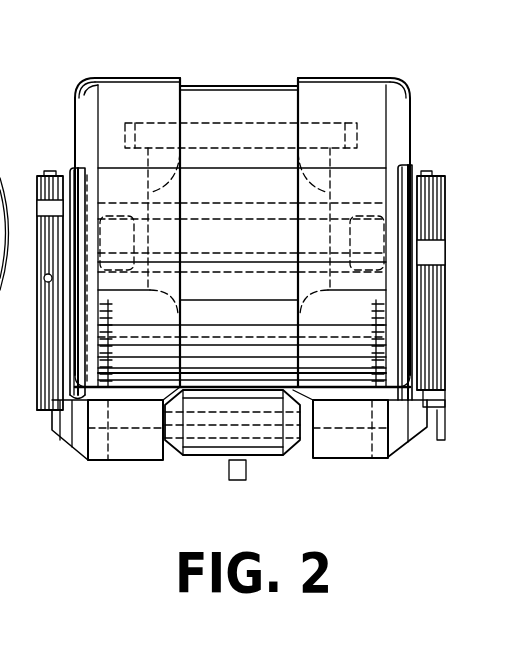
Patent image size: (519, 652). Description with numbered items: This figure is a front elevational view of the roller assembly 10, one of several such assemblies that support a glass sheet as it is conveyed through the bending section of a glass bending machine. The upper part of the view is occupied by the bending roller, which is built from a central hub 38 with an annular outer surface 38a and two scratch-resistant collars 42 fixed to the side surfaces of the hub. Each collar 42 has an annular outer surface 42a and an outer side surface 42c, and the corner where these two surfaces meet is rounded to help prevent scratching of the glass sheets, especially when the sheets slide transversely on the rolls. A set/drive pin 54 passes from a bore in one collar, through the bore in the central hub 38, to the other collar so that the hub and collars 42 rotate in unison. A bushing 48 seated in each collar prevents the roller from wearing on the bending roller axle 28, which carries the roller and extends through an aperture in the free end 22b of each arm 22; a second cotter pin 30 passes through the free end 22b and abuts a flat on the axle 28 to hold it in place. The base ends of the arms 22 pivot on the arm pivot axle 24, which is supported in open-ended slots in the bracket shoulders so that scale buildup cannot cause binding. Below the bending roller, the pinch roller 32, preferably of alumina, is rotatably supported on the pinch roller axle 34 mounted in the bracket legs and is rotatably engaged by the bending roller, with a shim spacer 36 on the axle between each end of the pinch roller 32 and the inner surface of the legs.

The roller assembly 10 is at (150, 31).
The scratch-resistant collar 42 is at (121, 94).
The annular outer surface of collar 42a is at (137, 78).
The outer side surface of collar 42c is at (73, 103).
The central hub 38 is at (228, 100).
The annular outer surface of central hub 38a is at (232, 88).
The set/drive pin 54 is at (272, 133).
The bushing 48 is at (78, 168).
The second cotter pin 30 is at (432, 172).
The free end of arm 22b is at (16, 214).
The bending roller axle 28 is at (31, 290).
The arm 22 is at (50, 353).
The arm pivot axle 24 is at (437, 350).
The shim spacer 36 is at (168, 442).
The pinch roller 32 is at (275, 422).
The pinch roller axle 34 is at (348, 423).